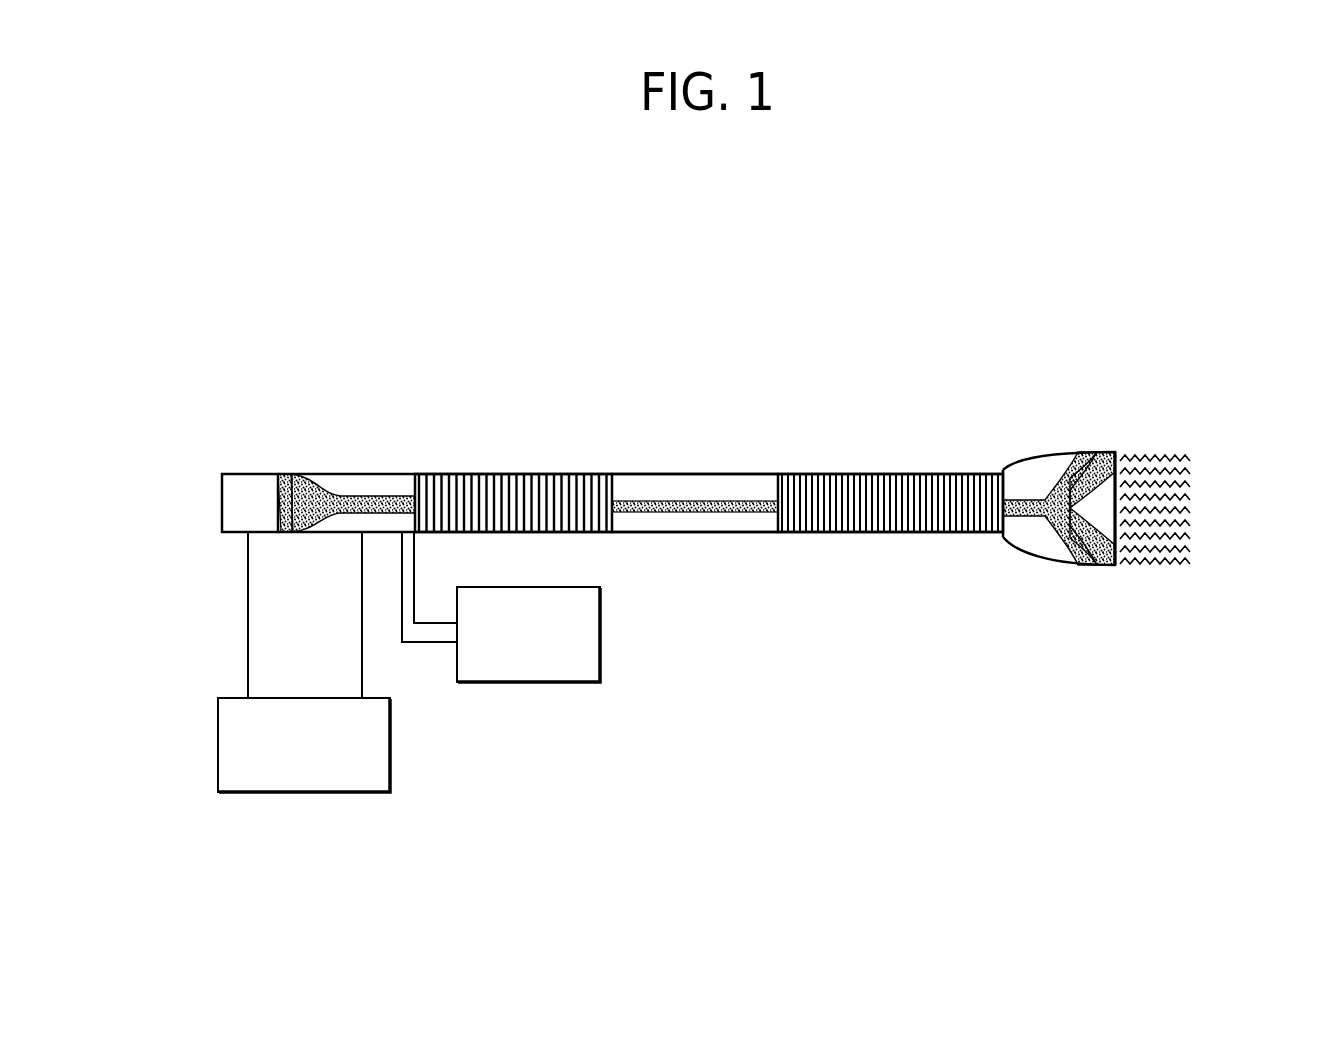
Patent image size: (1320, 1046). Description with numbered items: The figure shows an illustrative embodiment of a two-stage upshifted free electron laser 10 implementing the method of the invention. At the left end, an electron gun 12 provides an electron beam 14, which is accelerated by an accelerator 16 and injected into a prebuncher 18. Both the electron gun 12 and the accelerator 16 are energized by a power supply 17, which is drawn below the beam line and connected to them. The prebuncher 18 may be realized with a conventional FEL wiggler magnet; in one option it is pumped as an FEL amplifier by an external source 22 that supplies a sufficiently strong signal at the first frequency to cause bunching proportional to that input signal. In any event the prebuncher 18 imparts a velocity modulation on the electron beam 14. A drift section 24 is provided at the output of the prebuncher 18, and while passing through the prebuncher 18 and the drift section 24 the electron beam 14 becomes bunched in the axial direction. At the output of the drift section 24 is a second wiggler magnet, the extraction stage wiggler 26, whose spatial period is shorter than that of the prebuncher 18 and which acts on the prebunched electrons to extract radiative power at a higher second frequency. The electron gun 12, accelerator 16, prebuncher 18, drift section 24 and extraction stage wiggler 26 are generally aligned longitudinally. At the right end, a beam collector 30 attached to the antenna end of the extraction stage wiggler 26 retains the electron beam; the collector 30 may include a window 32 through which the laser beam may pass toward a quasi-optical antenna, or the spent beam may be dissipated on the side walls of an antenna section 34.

The two-stage upshifted free electron laser 10 is at (770, 298).
The electron gun 12 is at (237, 473).
The electron beam 14 is at (727, 512).
The accelerator 16 is at (327, 473).
The power supply 17 is at (345, 793).
The prebuncher 18 is at (563, 473).
The external source 22 is at (577, 683).
The drift section 24 is at (743, 473).
The extraction stage wiggler 26 is at (877, 534).
The beam collector 30 is at (1087, 458).
The window 32 is at (1118, 455).
The antenna section 34 is at (1200, 467).